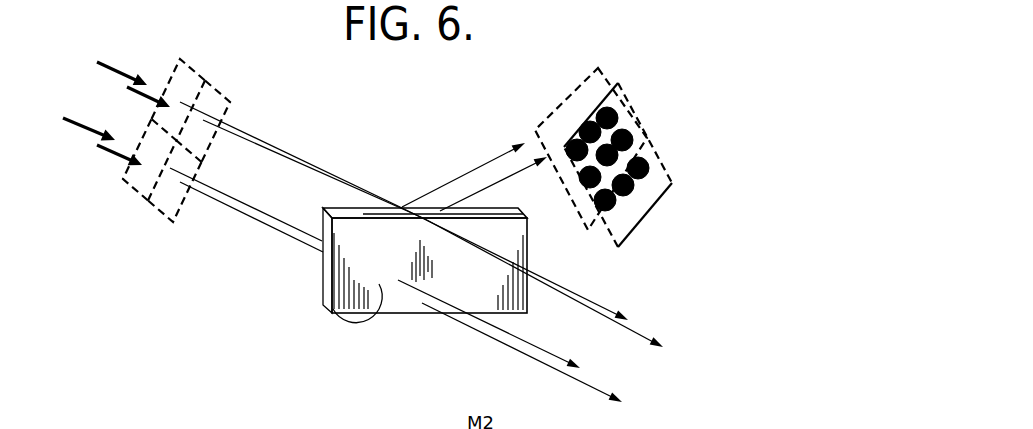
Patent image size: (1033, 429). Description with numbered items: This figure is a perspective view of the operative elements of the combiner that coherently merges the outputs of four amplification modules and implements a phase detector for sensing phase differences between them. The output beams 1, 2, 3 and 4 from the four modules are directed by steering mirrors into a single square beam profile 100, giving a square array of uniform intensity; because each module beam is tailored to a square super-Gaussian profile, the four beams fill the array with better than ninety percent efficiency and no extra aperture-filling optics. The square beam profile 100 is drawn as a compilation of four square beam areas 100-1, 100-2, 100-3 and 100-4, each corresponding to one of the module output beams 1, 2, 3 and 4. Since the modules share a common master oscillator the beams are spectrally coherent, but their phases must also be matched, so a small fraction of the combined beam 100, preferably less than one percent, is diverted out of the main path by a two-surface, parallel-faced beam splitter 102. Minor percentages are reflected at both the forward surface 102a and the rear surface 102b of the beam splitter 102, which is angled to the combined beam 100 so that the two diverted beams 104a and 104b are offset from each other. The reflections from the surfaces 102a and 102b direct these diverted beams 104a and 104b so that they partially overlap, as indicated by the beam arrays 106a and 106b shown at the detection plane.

The output beam 1 is at (119, 56).
The output beam 2 is at (138, 93).
The output beam 3 is at (110, 153).
The output beam 4 is at (79, 119).
The square beam profile 100 is at (236, 55).
The first array element 100-1 is at (177, 65).
The second array element 100-2 is at (230, 100).
The third array element 100-3 is at (163, 210).
The fourth array element 100-4 is at (132, 192).
The beam splitter 102 is at (380, 328).
The forward surface 102a is at (325, 210).
The rear surface 102b is at (330, 303).
The diverted beam 104a is at (480, 165).
The diverted beam 104b is at (482, 191).
The beam array 106a is at (540, 99).
The beam array 106b is at (663, 229).